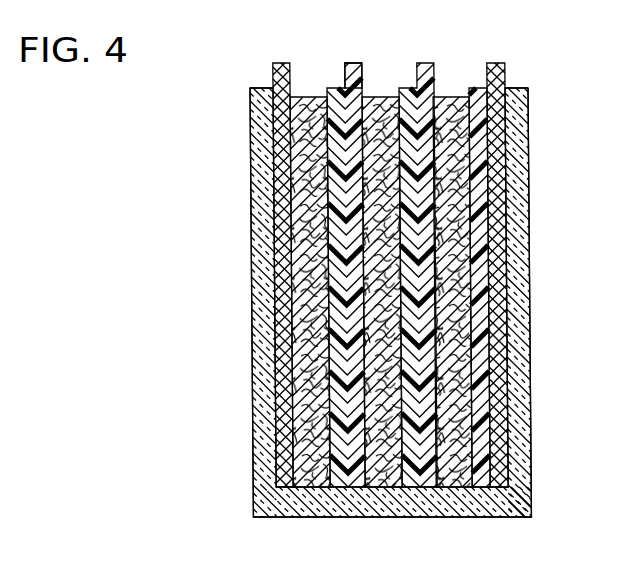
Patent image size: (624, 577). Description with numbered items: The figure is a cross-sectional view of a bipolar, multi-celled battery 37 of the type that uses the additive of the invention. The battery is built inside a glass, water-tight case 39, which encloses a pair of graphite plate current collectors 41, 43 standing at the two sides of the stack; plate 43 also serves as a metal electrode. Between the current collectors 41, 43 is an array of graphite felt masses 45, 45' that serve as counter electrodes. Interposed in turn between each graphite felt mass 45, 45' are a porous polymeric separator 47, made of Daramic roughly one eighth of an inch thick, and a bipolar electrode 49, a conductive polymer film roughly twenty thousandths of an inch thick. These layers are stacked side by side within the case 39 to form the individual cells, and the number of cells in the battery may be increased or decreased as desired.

The bipolar, multi-celled battery 37 is at (553, 271).
The glass, water-tight case 39 is at (521, 430).
The graphite plate current collector 41 is at (278, 63).
The graphite plate current collector 43 is at (498, 63).
The graphite felt mass 45 is at (346, 323).
The graphite felt mass 45' is at (465, 323).
The porous polymeric separator 47 is at (331, 90).
The bipolar electrode 49 is at (353, 63).